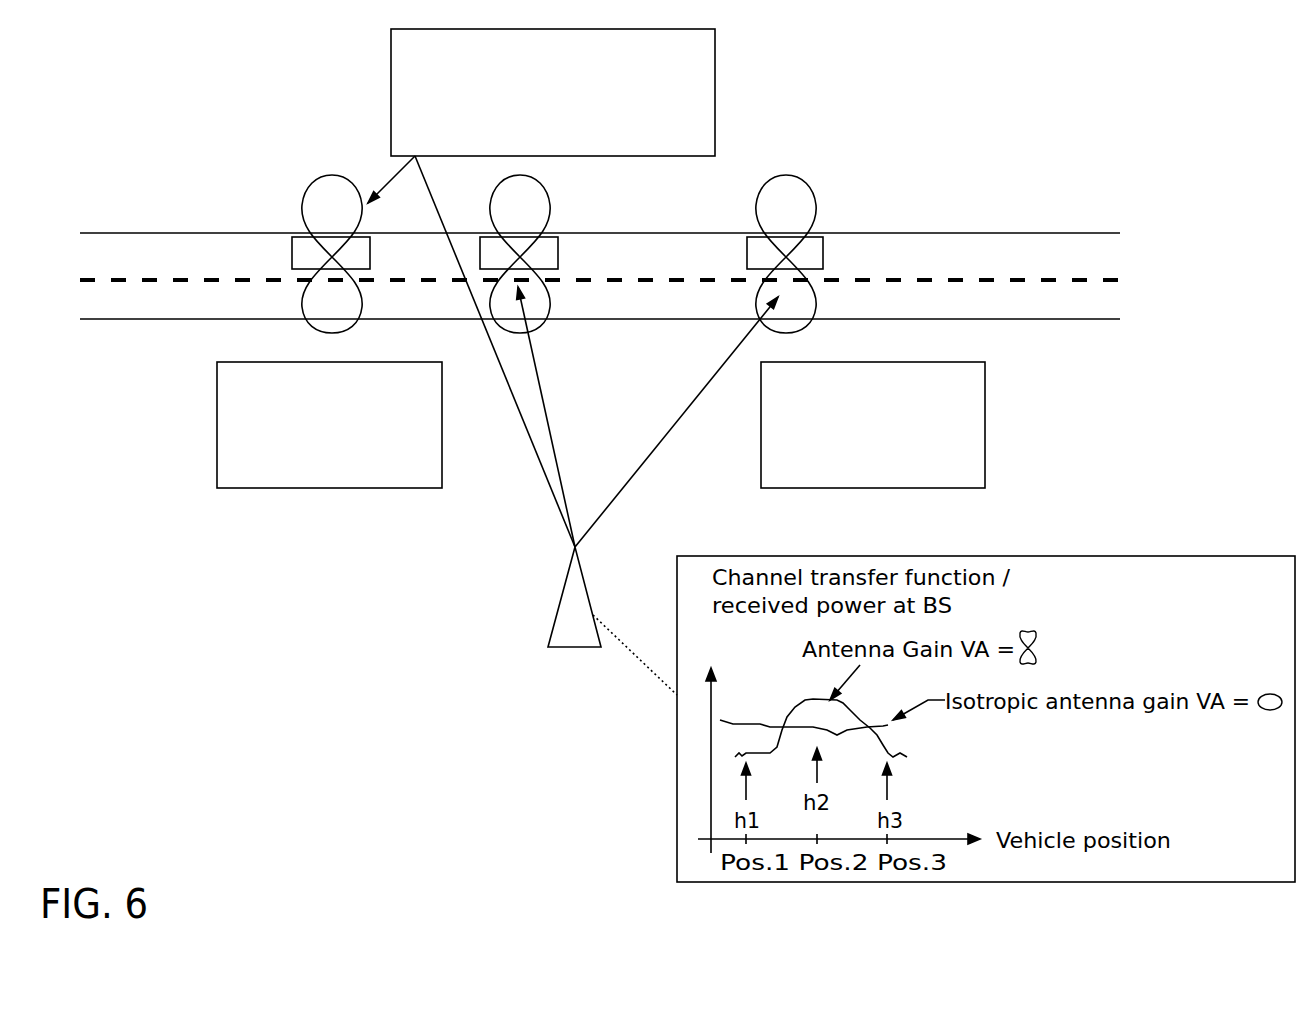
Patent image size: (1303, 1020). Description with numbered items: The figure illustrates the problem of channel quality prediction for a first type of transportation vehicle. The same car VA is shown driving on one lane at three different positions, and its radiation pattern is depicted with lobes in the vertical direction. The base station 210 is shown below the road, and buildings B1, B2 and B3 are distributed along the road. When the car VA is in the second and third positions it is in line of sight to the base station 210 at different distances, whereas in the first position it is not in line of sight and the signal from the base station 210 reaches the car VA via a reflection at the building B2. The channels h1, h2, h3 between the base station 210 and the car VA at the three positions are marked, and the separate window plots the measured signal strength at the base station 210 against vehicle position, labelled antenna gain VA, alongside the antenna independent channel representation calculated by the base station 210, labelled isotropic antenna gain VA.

The building B1 is at (962, 420).
The building B2 is at (702, 89).
The building B3 is at (239, 413).
The car VA is at (304, 247).
The base station 210 is at (570, 600).
The channel h1 is at (676, 422).
The channel h2 is at (547, 417).
The channel h3 is at (495, 351).